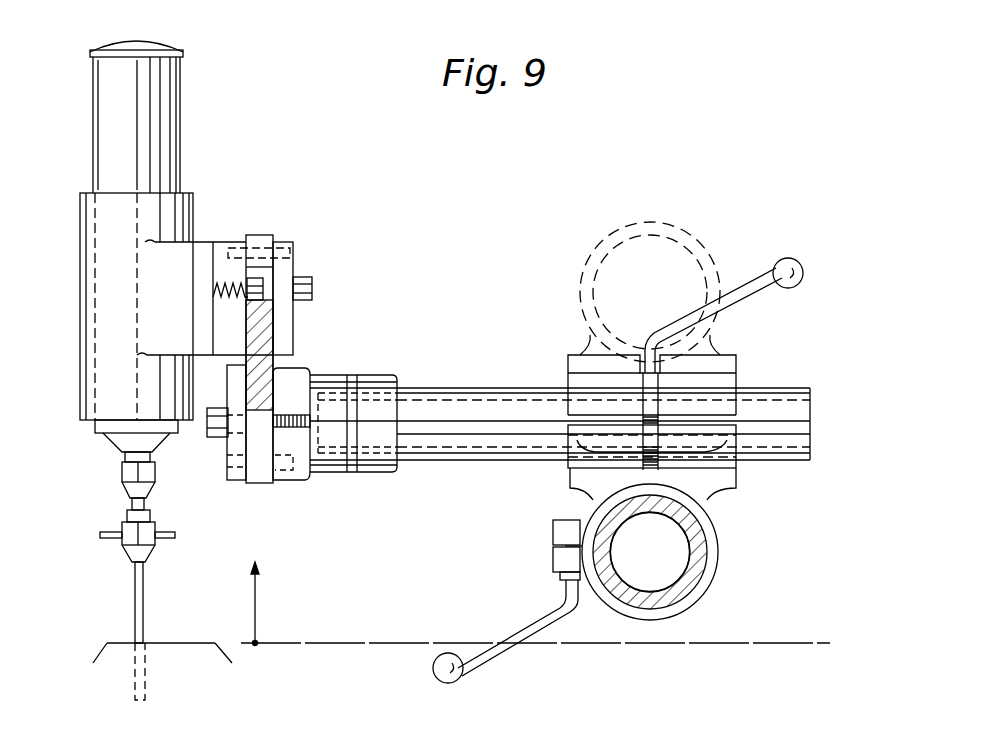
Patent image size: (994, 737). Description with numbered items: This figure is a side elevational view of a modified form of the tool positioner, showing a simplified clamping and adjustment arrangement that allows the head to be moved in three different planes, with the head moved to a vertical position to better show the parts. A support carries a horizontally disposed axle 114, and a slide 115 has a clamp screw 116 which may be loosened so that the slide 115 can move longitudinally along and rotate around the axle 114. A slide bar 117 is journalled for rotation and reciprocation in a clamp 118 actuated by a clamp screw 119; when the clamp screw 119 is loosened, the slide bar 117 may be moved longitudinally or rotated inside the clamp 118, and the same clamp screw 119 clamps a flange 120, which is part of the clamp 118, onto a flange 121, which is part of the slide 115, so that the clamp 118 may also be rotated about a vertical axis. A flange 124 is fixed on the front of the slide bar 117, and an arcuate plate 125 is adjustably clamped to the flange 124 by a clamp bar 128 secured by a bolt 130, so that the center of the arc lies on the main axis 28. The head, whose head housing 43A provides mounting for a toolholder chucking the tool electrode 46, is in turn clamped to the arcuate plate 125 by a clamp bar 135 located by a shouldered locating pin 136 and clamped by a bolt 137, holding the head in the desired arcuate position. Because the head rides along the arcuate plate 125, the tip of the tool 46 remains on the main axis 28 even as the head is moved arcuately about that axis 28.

The main axis 28 is at (348, 628).
The head housing 43A is at (103, 253).
The tool 46 is at (145, 615).
The horizontally disposed axle 114 is at (618, 572).
The slide 115 is at (720, 540).
The clamp screw 116 is at (547, 600).
The slide bar 117 is at (462, 390).
The clamp 118 is at (727, 378).
The clamp screw 119 is at (745, 298).
The flange 120 is at (735, 455).
The flange 121 is at (735, 475).
The flange 124 is at (305, 370).
The arcuate plate 125 is at (265, 333).
The clamp bar 128 is at (240, 482).
The bolt 130 is at (215, 440).
The clamp bar 135 is at (287, 270).
The shouldered locating pin 136 is at (296, 252).
The bolt 137 is at (312, 287).